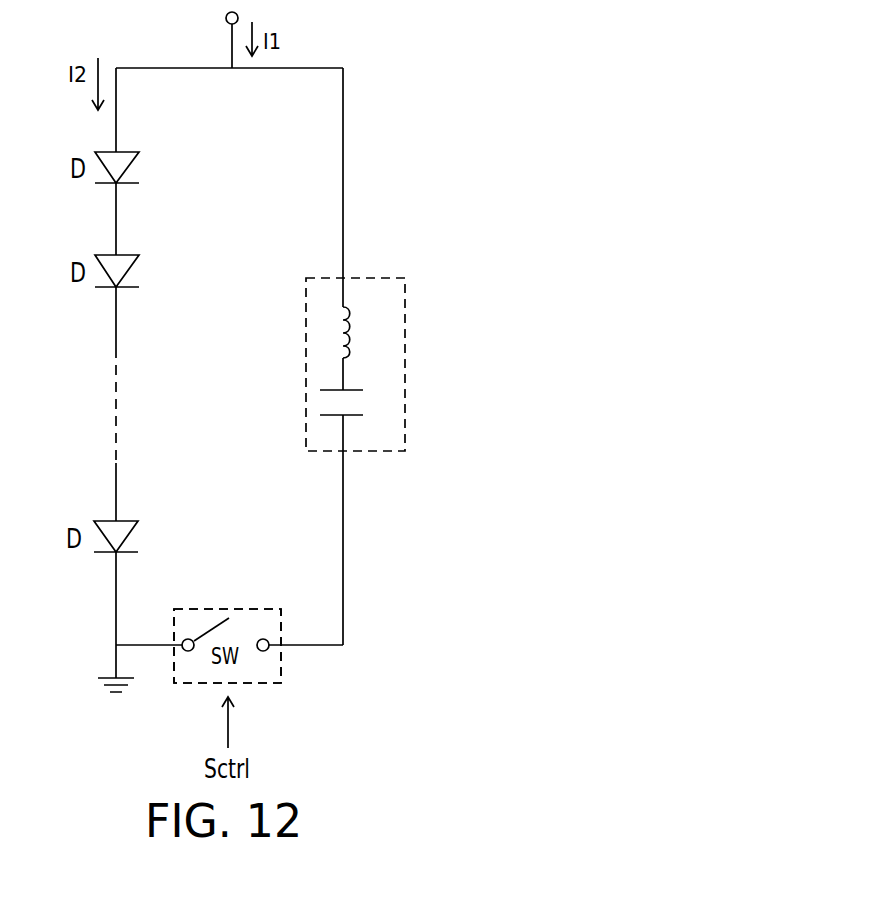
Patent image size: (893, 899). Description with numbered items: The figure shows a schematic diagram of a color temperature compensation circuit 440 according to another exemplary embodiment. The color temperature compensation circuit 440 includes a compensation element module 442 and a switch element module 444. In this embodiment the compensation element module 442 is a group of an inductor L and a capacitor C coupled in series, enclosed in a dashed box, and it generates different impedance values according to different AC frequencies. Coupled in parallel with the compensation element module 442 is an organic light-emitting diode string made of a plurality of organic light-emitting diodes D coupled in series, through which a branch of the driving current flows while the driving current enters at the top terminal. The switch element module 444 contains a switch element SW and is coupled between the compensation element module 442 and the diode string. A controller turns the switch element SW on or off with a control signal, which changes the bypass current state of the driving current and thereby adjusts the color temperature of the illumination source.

The color temperature compensation circuit 440 is at (496, 558).
The compensation element module 442 is at (377, 451).
The switch element module 444 is at (281, 672).